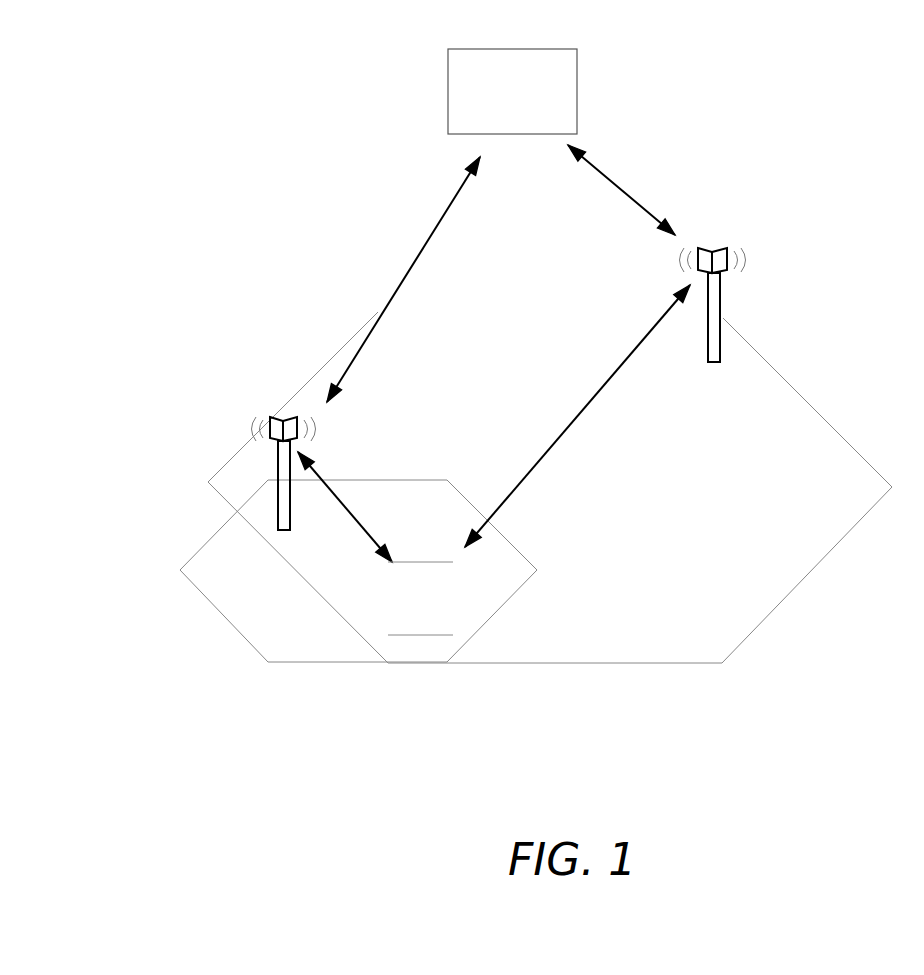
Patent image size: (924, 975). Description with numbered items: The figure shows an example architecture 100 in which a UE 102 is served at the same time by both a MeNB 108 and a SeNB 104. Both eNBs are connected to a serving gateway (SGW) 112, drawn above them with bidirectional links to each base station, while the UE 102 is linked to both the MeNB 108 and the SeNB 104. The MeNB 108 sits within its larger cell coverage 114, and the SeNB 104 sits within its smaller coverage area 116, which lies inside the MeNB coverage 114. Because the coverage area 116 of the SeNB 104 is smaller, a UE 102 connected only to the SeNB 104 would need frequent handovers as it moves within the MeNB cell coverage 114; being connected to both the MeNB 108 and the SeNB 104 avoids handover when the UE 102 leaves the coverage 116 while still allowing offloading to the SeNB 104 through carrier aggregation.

The example architecture 100 is at (183, 157).
The UE 102 is at (376, 606).
The SeNB 104 is at (258, 414).
The MeNB 108 is at (735, 276).
The serving gateway (SGW) 112 is at (483, 76).
The MeNB cell coverage 114 is at (550, 487).
The SeNB coverage area 116 is at (353, 570).